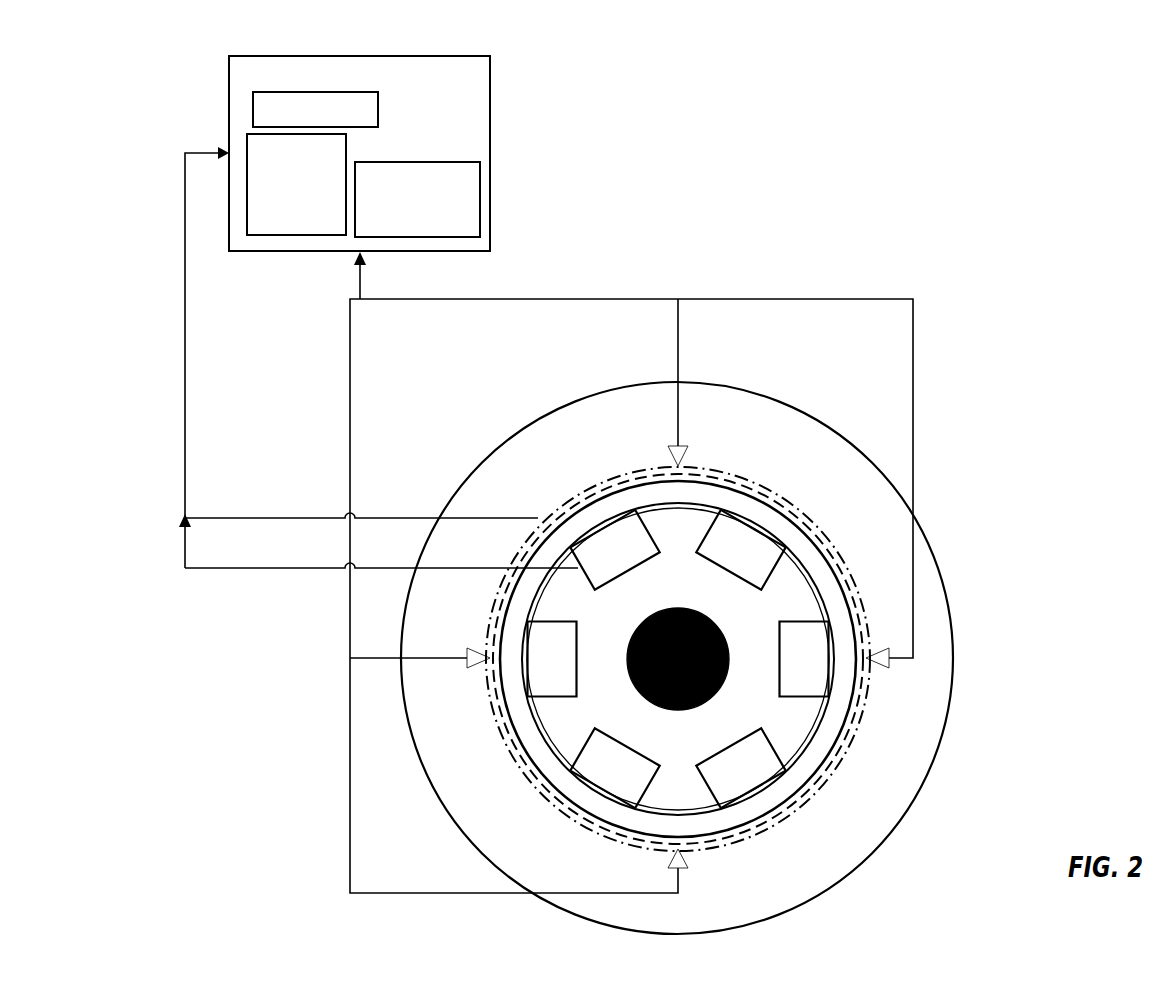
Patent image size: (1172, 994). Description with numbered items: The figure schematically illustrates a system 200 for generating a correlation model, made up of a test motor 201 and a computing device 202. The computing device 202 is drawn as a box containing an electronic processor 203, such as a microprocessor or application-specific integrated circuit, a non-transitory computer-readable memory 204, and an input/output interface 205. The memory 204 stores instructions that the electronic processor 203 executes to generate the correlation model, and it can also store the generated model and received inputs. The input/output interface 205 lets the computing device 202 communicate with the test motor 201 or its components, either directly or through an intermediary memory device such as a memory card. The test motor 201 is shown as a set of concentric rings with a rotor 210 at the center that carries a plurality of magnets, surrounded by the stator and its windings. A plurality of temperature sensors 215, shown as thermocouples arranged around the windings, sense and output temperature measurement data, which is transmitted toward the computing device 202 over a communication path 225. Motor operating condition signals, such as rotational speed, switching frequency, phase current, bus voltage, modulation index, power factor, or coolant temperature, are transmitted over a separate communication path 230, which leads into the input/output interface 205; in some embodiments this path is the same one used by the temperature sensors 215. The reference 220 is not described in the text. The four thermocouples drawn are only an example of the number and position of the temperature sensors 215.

The system 200 is at (1003, 131).
The test motor 201 is at (937, 403).
The computing device 202 is at (490, 62).
The electronic processor 203 is at (418, 162).
The memory 204 is at (253, 110).
The input/output interface 205 is at (293, 237).
The rotor 210 is at (825, 697).
The temperature sensors 215 is at (872, 643).
The sensor ring 220 is at (843, 547).
The communication path 225 is at (612, 298).
The communication path 230 is at (185, 340).